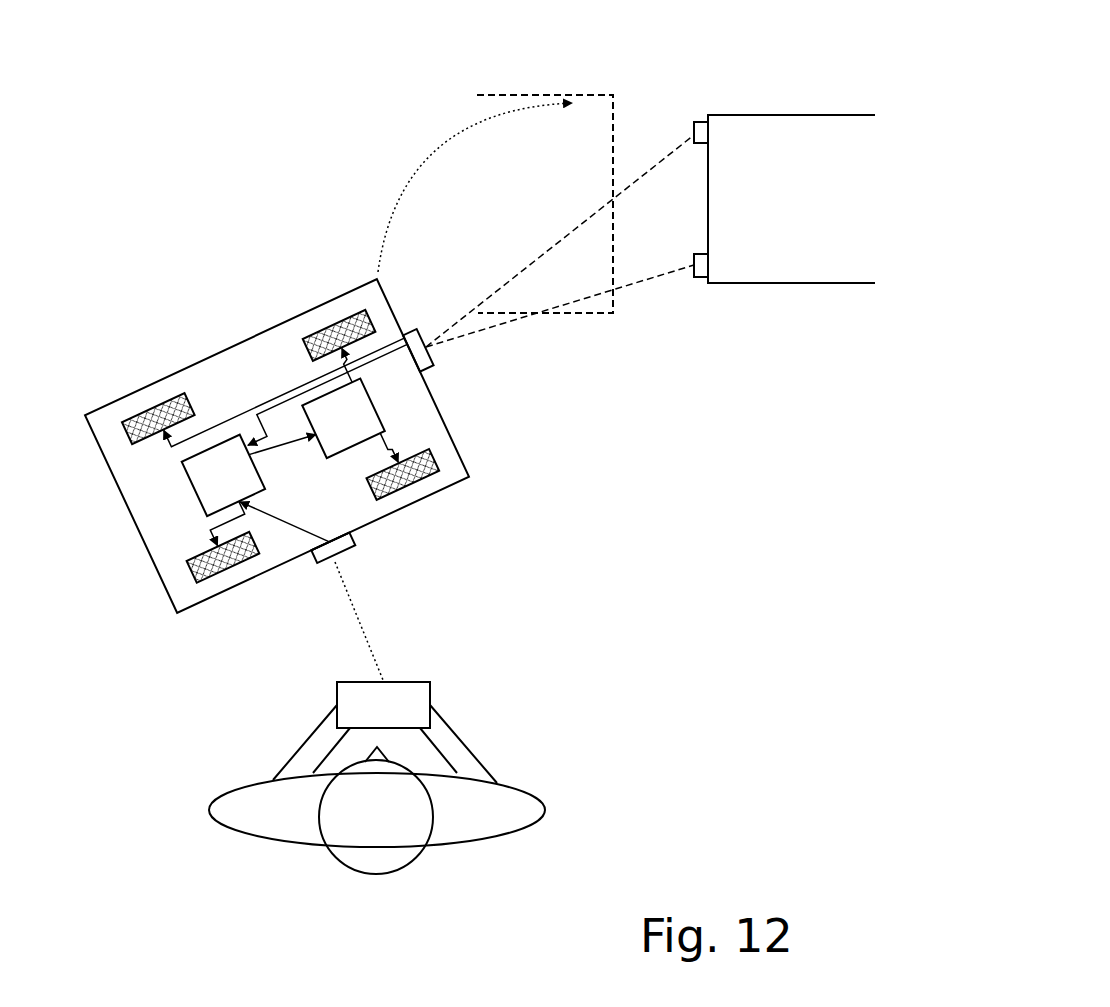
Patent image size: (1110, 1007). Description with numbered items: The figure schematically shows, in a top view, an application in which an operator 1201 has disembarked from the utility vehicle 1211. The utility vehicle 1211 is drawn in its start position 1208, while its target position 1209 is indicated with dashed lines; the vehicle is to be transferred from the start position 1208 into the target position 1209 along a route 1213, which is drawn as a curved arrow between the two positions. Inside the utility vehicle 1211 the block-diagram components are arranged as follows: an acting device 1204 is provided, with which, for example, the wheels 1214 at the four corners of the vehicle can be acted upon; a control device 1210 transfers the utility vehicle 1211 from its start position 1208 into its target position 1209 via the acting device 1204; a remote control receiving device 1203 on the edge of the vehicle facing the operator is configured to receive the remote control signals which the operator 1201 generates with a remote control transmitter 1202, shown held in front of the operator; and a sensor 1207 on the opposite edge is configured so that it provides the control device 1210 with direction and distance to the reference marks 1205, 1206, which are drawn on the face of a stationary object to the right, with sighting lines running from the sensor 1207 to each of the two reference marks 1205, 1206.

The operator 1201 is at (300, 815).
The remote control transmitter 1202 is at (410, 703).
The remote control receiving device 1203 is at (283, 645).
The acting device 1204 is at (343, 418).
The reference mark 1205 is at (690, 128).
The reference mark 1206 is at (690, 270).
The sensor 1207 is at (430, 372).
The start position 1208 is at (247, 353).
The target position 1209 is at (588, 93).
The control device 1210 is at (223, 475).
The utility vehicle 1211 is at (343, 526).
The route 1213 is at (443, 145).
The wheels 1214 is at (483, 498).